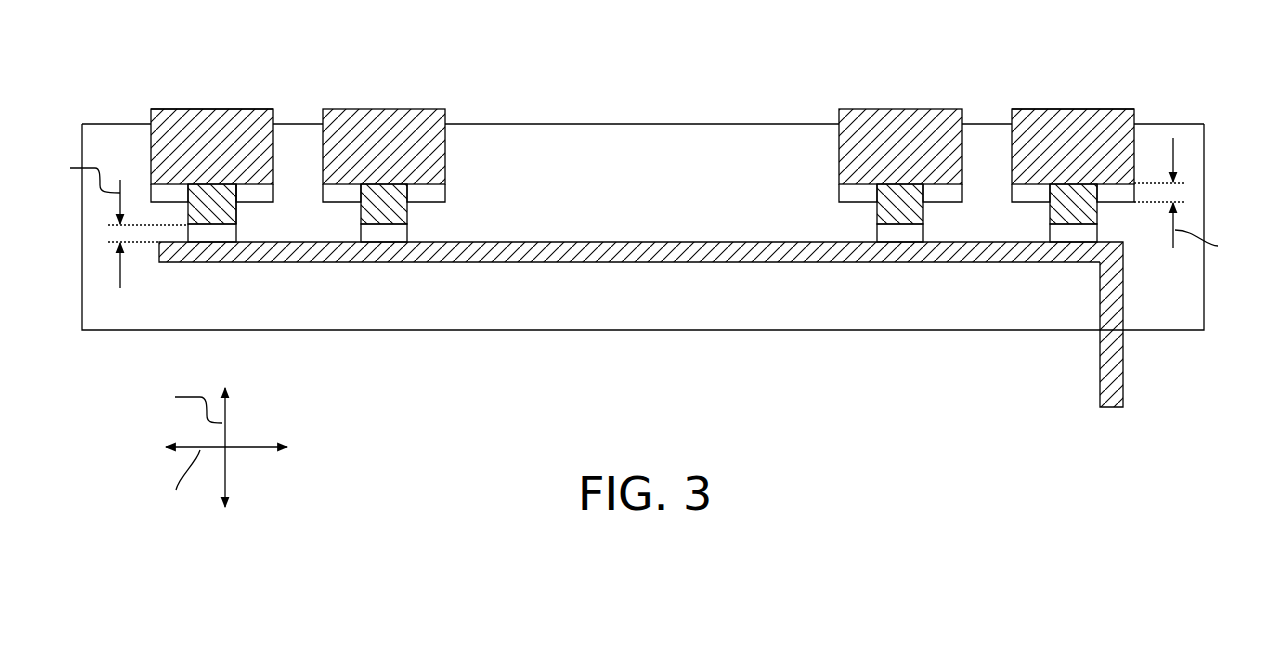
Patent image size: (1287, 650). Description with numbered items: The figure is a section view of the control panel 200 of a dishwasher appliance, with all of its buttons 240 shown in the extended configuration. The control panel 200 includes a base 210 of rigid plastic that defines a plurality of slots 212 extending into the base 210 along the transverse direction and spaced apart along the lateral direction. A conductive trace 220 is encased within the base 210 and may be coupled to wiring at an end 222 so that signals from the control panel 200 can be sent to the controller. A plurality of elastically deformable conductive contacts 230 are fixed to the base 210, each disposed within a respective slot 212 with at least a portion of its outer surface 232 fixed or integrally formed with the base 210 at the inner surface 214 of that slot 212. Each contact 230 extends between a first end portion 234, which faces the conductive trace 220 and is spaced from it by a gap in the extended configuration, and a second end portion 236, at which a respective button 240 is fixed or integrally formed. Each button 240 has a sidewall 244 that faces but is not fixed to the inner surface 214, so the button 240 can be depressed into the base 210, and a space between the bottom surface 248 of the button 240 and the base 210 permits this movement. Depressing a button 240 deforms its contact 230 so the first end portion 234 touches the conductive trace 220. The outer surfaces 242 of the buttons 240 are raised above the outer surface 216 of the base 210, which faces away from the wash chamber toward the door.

The control panel 200 is at (663, 278).
The base 210 is at (643, 220).
The slots 212 is at (209, 240).
The inner surface 214 is at (241, 218).
The outer surface 216 is at (684, 120).
The conductive trace 220 is at (641, 292).
The end 222 is at (1097, 401).
The elastically deformable conductive contacts 230 is at (394, 206).
The outer surface 232 is at (241, 192).
The first end portion 234 is at (1045, 225).
The second end portion 236 is at (1042, 181).
The buttons 240 is at (632, 126).
The outer surfaces 242 is at (186, 105).
The sidewall 244 is at (599, 147).
The bottom surface 248 is at (169, 189).